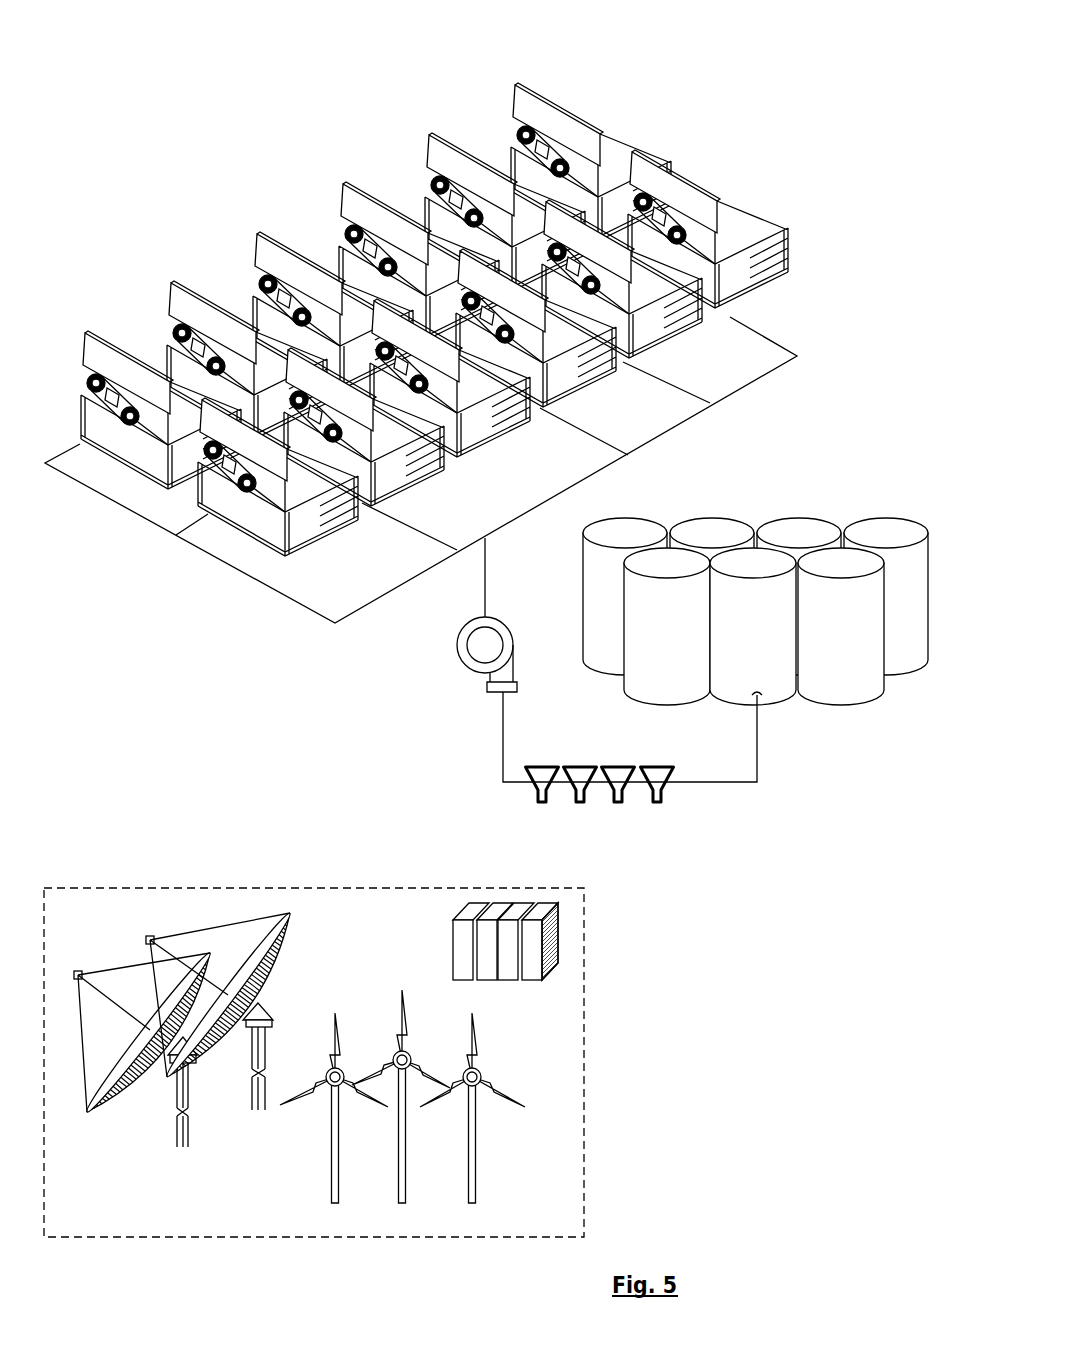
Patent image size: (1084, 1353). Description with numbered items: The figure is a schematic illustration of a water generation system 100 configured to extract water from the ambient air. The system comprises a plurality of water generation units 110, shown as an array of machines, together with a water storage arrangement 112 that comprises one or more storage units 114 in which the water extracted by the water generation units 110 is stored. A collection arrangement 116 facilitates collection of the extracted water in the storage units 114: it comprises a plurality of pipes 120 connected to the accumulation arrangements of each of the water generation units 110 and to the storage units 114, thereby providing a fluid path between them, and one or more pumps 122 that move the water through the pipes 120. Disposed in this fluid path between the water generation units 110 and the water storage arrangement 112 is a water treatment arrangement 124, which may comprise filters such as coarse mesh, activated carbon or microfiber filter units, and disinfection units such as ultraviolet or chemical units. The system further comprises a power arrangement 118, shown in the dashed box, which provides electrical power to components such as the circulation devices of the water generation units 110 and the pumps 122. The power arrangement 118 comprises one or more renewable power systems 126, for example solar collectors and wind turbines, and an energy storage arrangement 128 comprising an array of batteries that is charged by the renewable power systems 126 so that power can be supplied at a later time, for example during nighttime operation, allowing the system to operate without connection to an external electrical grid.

The water generation system 100 is at (752, 66).
The water generation units 110 is at (342, 208).
The water storage arrangement 112 is at (772, 588).
The storage units 114 is at (773, 667).
The collection arrangement 116 is at (285, 708).
The power arrangement 118 is at (584, 978).
The pipes 120 is at (223, 563).
The pumps 122 is at (465, 668).
The water treatment arrangement 124 is at (687, 809).
The renewable power systems 126 is at (175, 1108).
The energy storage arrangement 128 is at (465, 957).